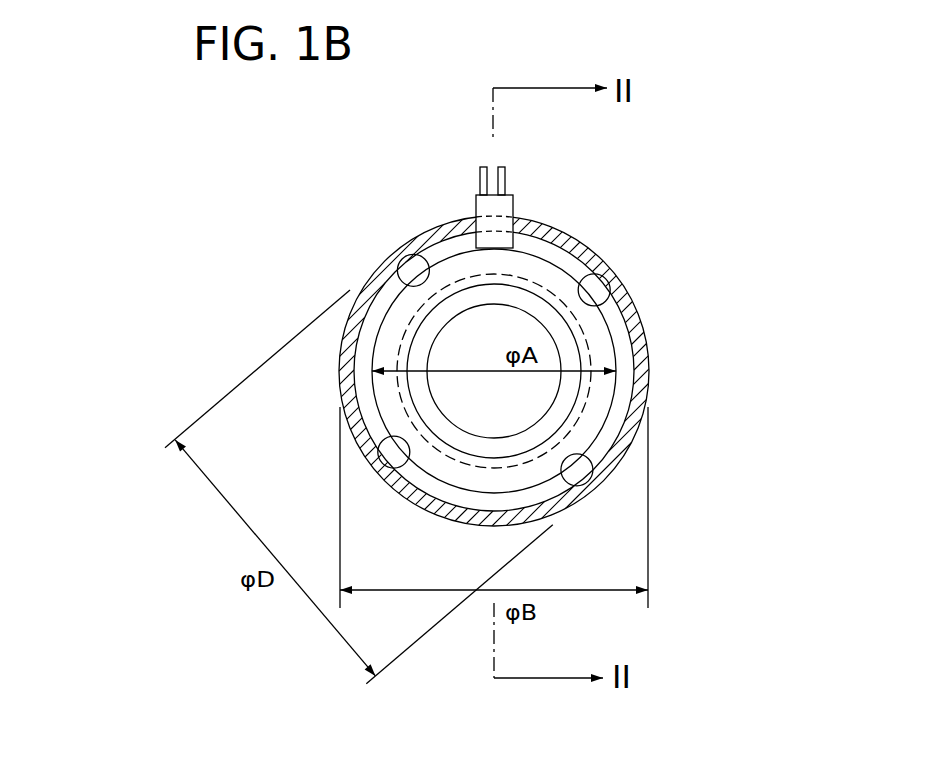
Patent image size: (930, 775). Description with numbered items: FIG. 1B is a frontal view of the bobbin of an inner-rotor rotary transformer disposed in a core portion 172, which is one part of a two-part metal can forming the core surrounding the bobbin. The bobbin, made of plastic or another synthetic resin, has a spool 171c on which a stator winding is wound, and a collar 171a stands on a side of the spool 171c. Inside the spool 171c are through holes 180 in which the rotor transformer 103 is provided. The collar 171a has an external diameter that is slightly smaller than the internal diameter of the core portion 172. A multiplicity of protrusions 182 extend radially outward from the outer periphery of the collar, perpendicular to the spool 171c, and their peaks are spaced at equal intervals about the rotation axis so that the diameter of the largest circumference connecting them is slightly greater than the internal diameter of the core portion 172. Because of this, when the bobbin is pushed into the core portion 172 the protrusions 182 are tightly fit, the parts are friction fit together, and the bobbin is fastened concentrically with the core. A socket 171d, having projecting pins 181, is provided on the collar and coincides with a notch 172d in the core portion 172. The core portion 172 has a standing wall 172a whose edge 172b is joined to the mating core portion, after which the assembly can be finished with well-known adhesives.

The rotor transformer 103 is at (533, 385).
The collar 171a is at (600, 347).
The spool 171c is at (400, 327).
The socket 171d is at (503, 207).
The core portion 172 is at (502, 330).
The standing wall 172a is at (582, 238).
The edge 172b is at (643, 392).
The notch 172d is at (474, 216).
The through holes 180 is at (478, 440).
The projecting pins 181 is at (486, 162).
The protrusions 182 is at (412, 266).